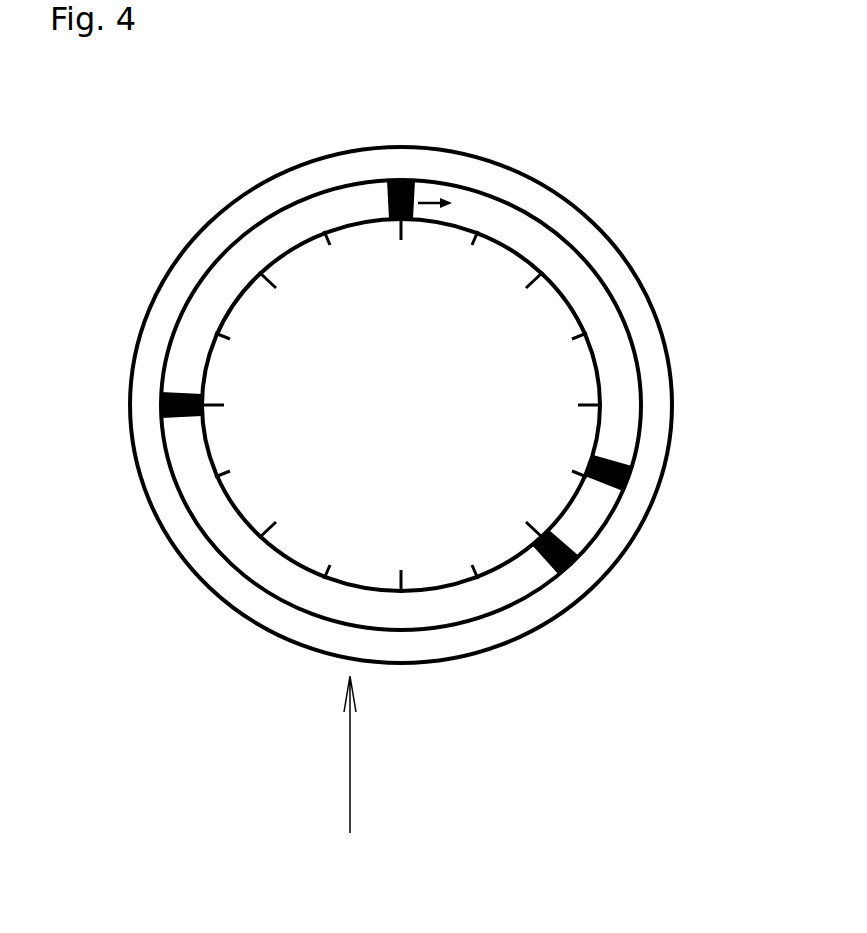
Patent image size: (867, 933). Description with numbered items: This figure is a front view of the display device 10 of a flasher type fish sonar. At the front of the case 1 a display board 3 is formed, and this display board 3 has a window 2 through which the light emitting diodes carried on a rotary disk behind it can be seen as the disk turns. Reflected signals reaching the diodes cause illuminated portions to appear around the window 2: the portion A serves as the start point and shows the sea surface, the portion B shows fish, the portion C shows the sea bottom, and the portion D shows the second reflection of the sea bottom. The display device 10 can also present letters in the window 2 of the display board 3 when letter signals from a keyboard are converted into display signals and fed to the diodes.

The case 1 is at (552, 197).
The window 2 is at (313, 210).
The display board 3 is at (292, 270).
The display device 10 is at (354, 778).
The portion A is at (396, 240).
The portion B is at (632, 480).
The portion C is at (565, 570).
The portion D is at (163, 402).